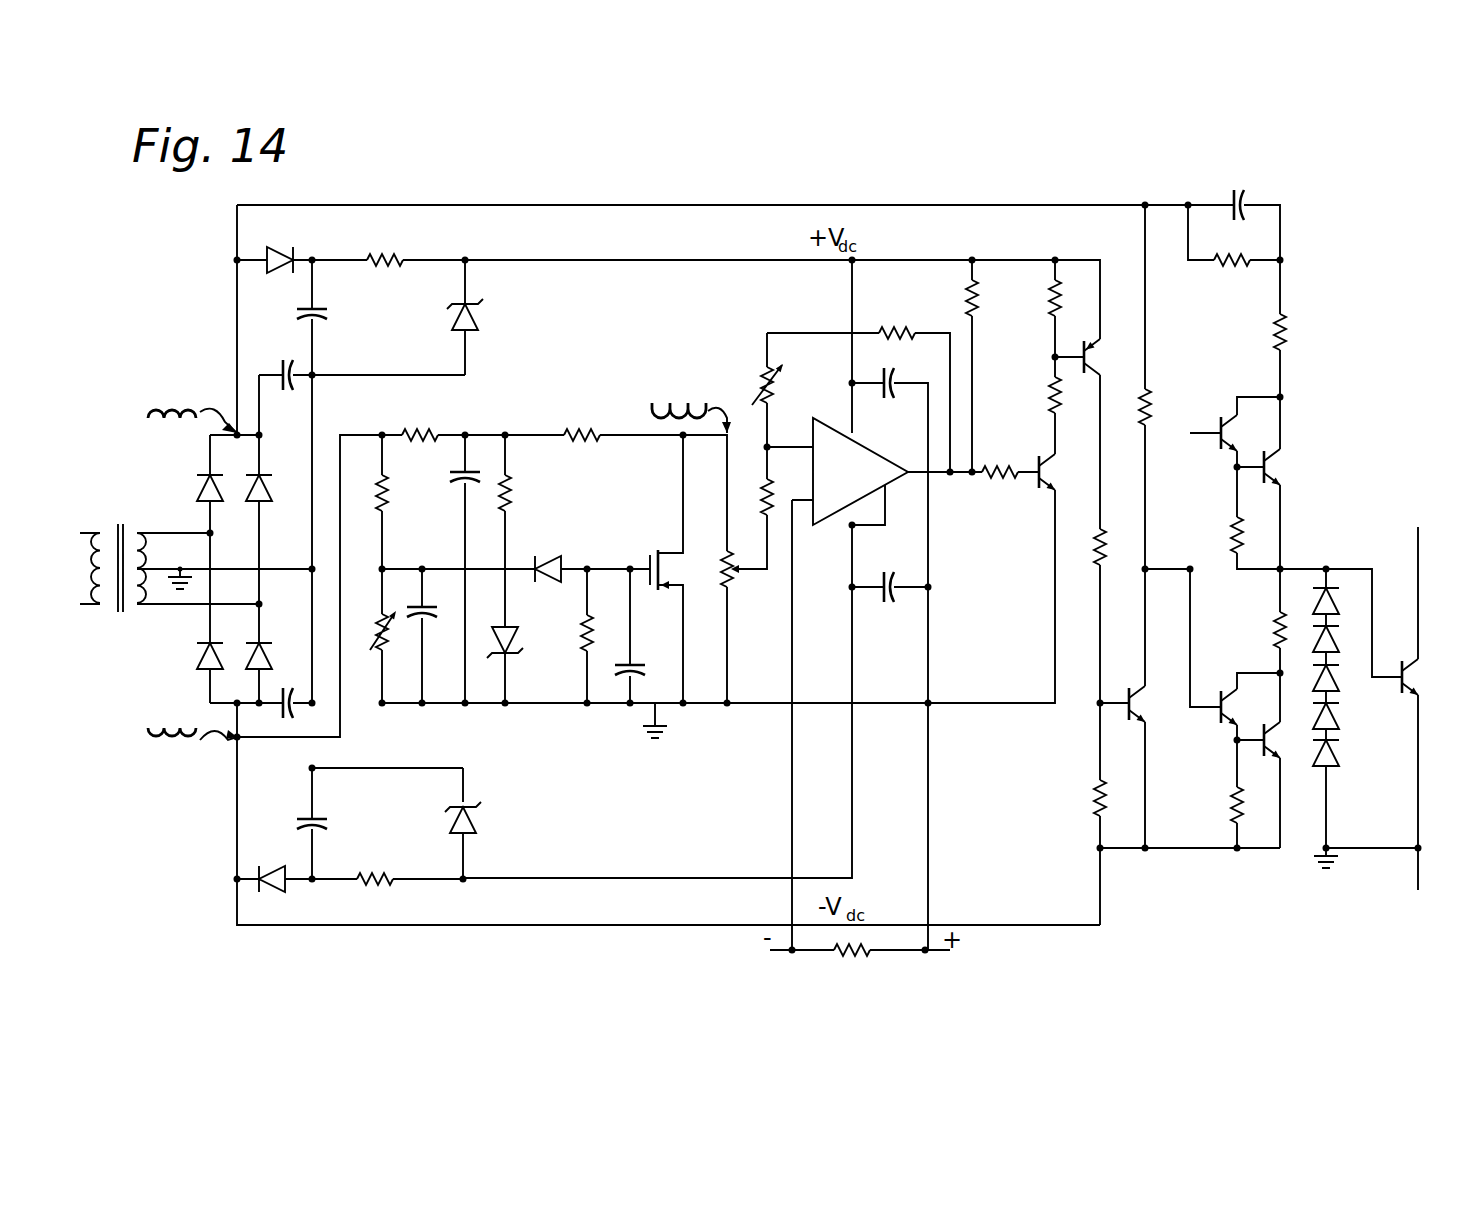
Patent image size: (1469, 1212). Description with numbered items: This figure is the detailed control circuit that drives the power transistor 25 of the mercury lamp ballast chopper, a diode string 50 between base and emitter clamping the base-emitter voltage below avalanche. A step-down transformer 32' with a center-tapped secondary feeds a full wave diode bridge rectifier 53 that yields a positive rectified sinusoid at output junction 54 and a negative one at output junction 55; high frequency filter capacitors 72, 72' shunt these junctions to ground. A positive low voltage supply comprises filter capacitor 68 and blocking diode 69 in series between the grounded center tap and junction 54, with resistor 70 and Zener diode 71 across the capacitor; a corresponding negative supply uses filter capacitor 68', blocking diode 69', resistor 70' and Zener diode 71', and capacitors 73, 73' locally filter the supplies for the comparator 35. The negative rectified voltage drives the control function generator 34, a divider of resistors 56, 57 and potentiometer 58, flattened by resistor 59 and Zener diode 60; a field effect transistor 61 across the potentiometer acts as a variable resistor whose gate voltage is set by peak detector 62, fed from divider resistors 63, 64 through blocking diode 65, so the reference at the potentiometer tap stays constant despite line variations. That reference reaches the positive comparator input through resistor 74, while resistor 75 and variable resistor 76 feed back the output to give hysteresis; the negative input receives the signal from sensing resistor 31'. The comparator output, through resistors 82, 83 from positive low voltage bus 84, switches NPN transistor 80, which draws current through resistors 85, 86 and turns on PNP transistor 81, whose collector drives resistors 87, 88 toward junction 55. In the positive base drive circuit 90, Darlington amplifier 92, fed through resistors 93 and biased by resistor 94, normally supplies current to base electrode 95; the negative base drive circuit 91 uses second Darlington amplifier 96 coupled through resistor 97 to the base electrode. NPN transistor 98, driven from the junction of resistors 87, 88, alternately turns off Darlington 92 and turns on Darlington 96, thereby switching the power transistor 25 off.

The power transistor 25 is at (1406, 654).
The sensing resistor 31' is at (865, 969).
The step-down transformer 32' is at (118, 547).
The control function generator 34 is at (524, 428).
The comparator 35 is at (838, 424).
The diode string 50 is at (1340, 690).
The full wave diode bridge rectifier 53 is at (234, 572).
The positive output junction 54 is at (240, 440).
The negative output junction 55 is at (246, 696).
The resistor 56 is at (418, 428).
The resistor 57 is at (588, 428).
The potentiometer 58 is at (722, 580).
The resistor 59 is at (510, 496).
The Zener diode 60 is at (516, 640).
The field effect transistor 61 is at (652, 548).
The peak detector circuit 62 is at (606, 566).
The resistor 63 is at (378, 496).
The resistor 64 is at (372, 636).
The blocking diode 65 is at (556, 560).
The filter capacitor 68 is at (328, 299).
The filter capacitor 68' is at (331, 807).
The blocking diode 69 is at (285, 243).
The blocking diode 69' is at (265, 862).
The resistor 70 is at (398, 245).
The resistor 70' is at (383, 862).
The Zener diode 71 is at (482, 315).
The Zener diode 71' is at (484, 818).
The high frequency filter capacitor 72 is at (270, 363).
The high frequency filter capacitor 72' is at (293, 685).
The capacitor 73 is at (906, 372).
The capacitor 73' is at (883, 606).
The resistor 74 is at (760, 494).
The resistor 75 is at (900, 330).
The variable resistor 76 is at (758, 380).
The NPN transistor 80 is at (1030, 490).
The PNP transistor 81 is at (1096, 360).
The resistor 82 is at (980, 298).
The resistor 83 is at (990, 484).
The positive low voltage bus 84 is at (900, 258).
The resistor 85 is at (1046, 312).
The resistor 86 is at (1046, 396).
The resistor 87 is at (1092, 560).
The resistor 88 is at (1092, 804).
The positive base drive circuit 90 is at (1218, 408).
The negative base drive circuit 91 is at (1232, 738).
The Darlington amplifier 92 is at (1250, 448).
The resistors 93 is at (1232, 270).
The biasing resistor 94 is at (1152, 400).
The base electrode 95 is at (1314, 567).
The second Darlington amplifier 96 is at (1250, 720).
The resistor 97 is at (1274, 622).
The NPN transistor 98 is at (1132, 690).